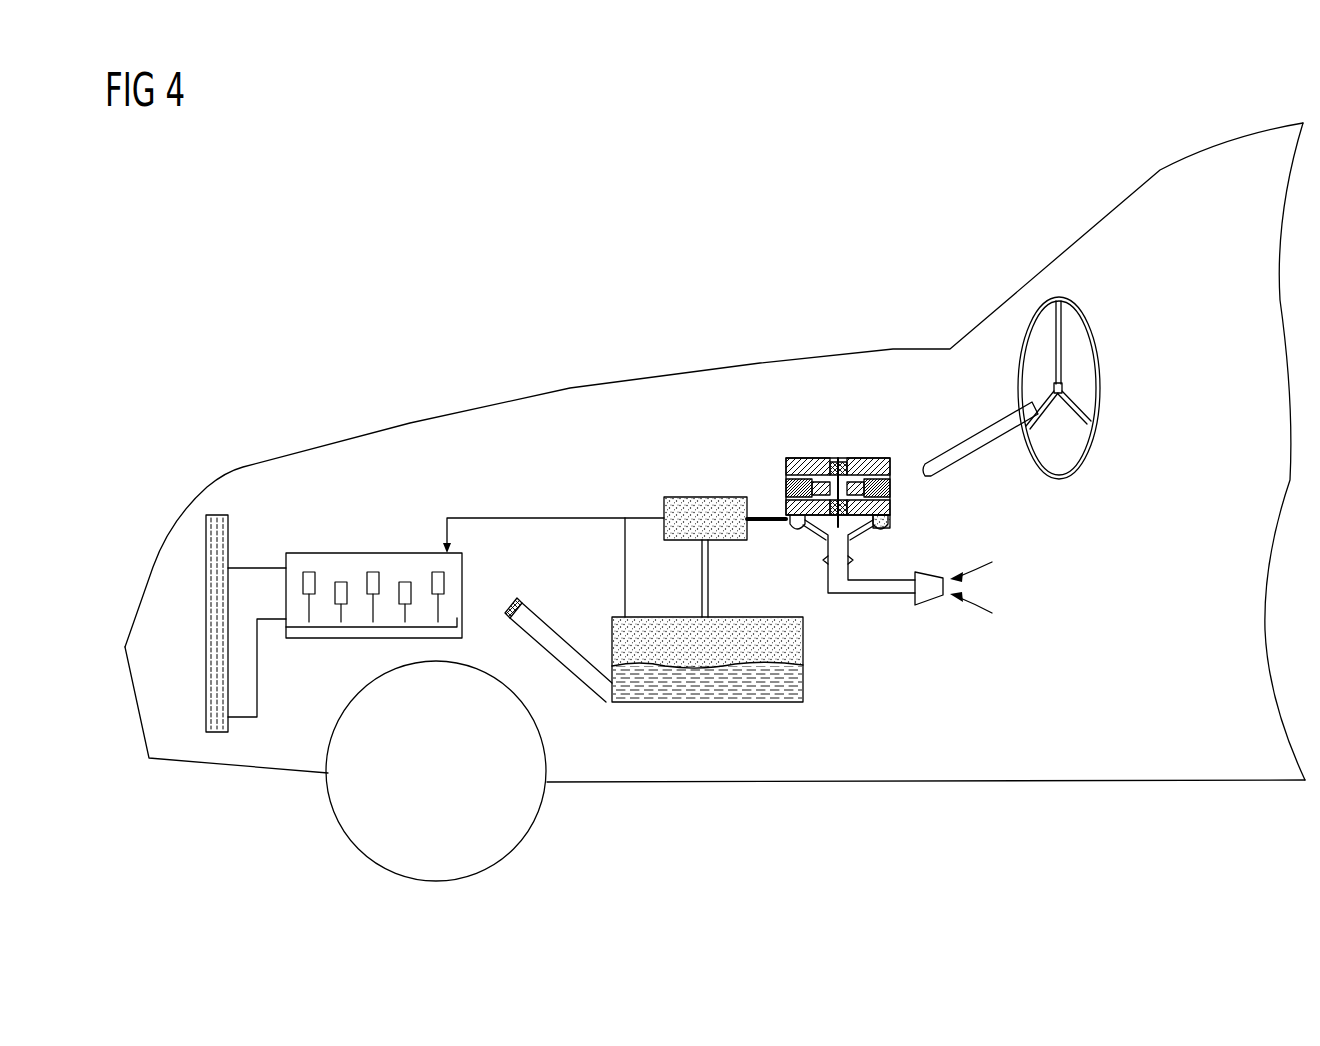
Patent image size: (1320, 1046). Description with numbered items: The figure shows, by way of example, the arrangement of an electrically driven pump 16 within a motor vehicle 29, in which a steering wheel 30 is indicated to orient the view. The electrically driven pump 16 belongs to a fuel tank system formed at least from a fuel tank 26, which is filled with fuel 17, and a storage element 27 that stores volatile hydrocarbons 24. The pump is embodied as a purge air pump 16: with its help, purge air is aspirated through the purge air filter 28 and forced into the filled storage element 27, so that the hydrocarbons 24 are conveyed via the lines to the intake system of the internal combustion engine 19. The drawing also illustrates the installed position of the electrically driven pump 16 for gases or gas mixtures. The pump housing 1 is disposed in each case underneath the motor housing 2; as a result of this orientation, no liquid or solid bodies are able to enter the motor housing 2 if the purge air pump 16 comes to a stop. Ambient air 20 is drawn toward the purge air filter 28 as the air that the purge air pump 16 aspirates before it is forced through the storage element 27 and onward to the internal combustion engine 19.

The pump housing 1 is at (890, 522).
The motor housing 2 is at (802, 468).
The electrically driven pump 16 is at (878, 439).
The fuel 17 is at (797, 678).
The internal combustion engine 19 is at (352, 560).
The ambient air 20 is at (982, 586).
The volatile hydrocarbons 24 is at (682, 506).
The fuel tank 26 is at (712, 703).
The storage element 27 is at (718, 497).
The purge air filter 28 is at (927, 602).
The motor vehicle 29 is at (790, 232).
The steering wheel 30 is at (1100, 381).